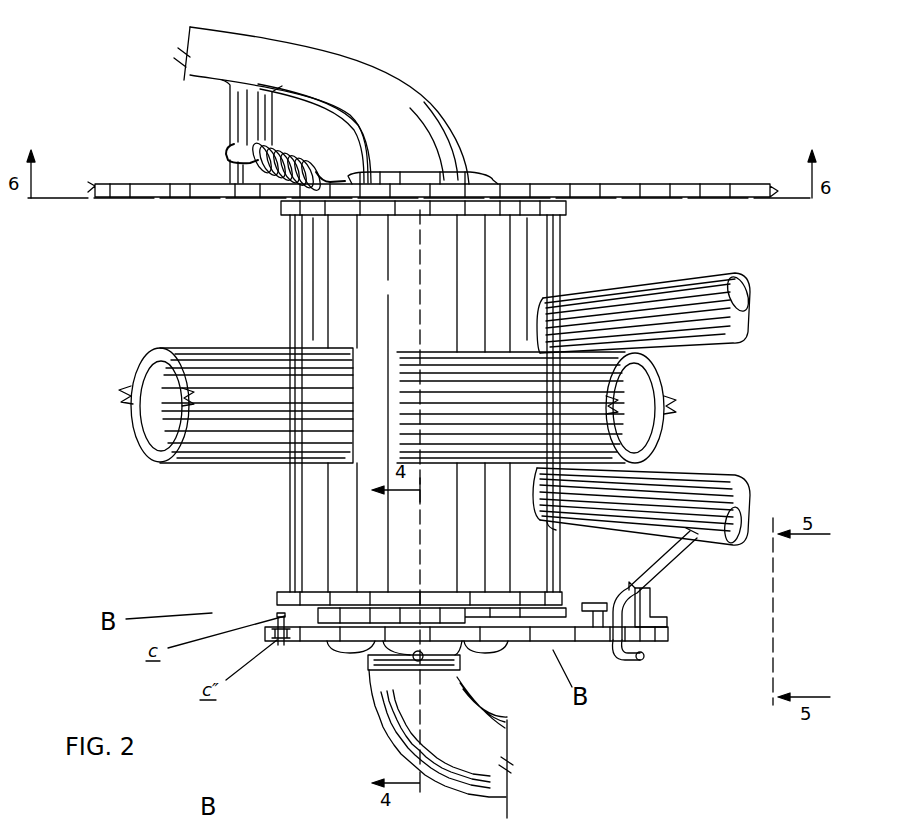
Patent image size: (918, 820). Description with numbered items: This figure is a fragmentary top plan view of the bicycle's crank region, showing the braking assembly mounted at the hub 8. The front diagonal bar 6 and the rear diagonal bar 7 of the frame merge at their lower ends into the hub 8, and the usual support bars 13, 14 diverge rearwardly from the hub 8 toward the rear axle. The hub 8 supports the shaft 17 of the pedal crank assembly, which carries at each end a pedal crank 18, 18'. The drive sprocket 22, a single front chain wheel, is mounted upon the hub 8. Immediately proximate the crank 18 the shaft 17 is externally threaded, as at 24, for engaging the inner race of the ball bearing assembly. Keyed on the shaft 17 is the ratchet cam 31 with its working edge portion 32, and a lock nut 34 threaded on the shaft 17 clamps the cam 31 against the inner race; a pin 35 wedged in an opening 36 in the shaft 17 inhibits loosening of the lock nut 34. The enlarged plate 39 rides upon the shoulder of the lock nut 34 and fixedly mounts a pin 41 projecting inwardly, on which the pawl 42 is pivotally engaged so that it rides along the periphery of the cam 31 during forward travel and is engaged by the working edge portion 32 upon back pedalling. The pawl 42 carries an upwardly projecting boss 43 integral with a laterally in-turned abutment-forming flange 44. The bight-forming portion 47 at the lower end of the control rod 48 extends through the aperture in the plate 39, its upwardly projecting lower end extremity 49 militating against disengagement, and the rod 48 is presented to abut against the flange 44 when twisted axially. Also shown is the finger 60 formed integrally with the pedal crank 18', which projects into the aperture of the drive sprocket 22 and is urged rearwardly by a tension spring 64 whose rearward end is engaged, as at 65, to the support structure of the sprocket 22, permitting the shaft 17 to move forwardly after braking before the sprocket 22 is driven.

The front diagonal bar 6 is at (210, 463).
The rear diagonal bar 7 is at (672, 407).
The hub 8 is at (287, 483).
The support bar 13 is at (735, 472).
The support bar 14 is at (752, 287).
The shaft 17 is at (366, 605).
The pedal crank 18 is at (429, 744).
The pedal crank 18' is at (353, 104).
The drive sprocket 22 is at (735, 187).
The external threads 24 is at (372, 660).
The ratchet cam 31 is at (310, 600).
The working edge portion 32 is at (505, 672).
The lock nut 34 is at (333, 653).
The pin 35 is at (387, 683).
The opening 36 is at (413, 658).
The plate 39 is at (270, 626).
The pin 41 is at (590, 643).
The pawl 42 is at (652, 600).
The boss 43 is at (667, 620).
The flange 44 is at (667, 572).
The bight-forming portion 47 is at (667, 640).
The control rod 48 is at (703, 548).
The lower end extremity 49 is at (644, 658).
The finger 60 is at (258, 152).
The tension spring 64 is at (312, 158).
The spring engagement 65 is at (330, 178).